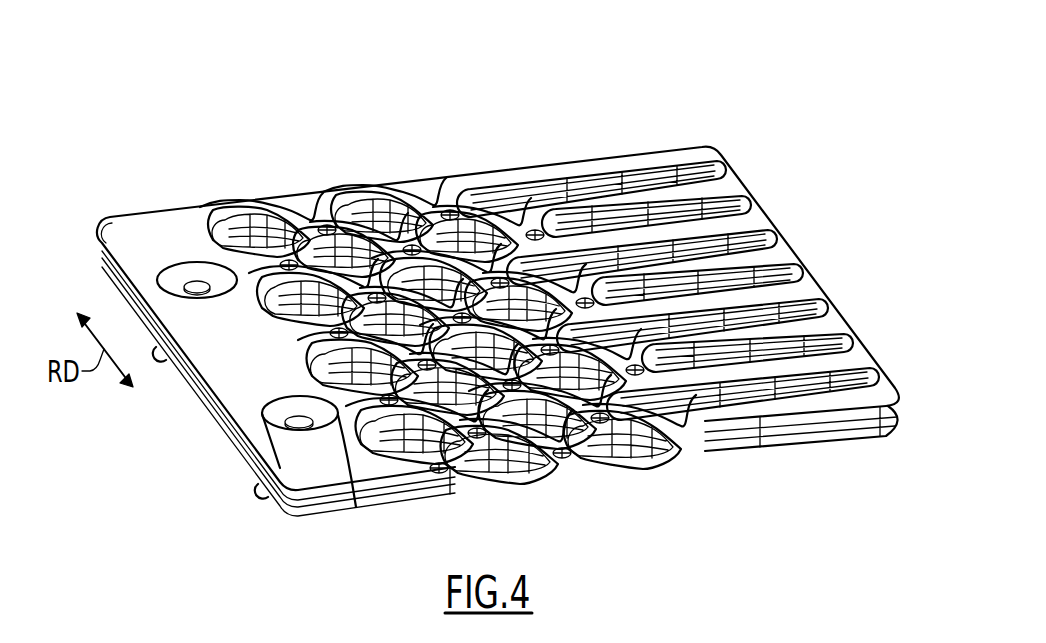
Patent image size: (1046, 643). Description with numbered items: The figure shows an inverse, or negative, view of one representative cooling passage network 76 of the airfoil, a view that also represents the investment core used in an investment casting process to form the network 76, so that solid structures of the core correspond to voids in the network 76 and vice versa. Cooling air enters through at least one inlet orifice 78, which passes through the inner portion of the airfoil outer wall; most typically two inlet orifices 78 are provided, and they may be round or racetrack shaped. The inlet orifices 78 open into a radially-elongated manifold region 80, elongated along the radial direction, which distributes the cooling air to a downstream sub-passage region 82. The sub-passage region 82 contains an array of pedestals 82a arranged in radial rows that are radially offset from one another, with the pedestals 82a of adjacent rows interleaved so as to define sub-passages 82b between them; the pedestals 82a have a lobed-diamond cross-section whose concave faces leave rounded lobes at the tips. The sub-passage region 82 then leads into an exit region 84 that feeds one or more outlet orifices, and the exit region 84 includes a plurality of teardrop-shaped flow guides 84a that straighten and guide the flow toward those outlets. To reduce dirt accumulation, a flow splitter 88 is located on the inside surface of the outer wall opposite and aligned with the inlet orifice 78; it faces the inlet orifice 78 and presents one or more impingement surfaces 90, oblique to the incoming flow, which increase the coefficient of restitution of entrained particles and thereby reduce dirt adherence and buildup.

The cooling passage network 76 is at (739, 461).
The inlet orifice 78 is at (168, 357).
The manifold region 80 is at (225, 186).
The sub-passage region 82 is at (454, 155).
The pedestals 82a is at (357, 273).
The sub-passages 82b is at (413, 372).
The exit region 84 is at (702, 124).
The flow guides 84a is at (787, 390).
The flow splitter 88 is at (282, 415).
The impingement surface 90 is at (356, 507).